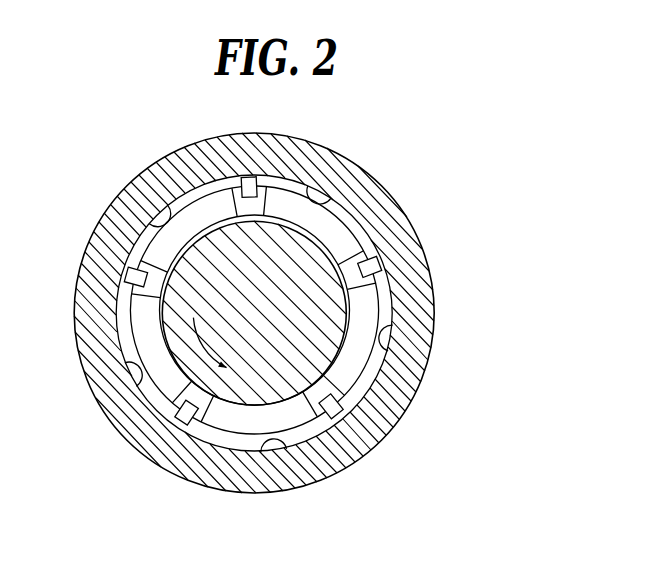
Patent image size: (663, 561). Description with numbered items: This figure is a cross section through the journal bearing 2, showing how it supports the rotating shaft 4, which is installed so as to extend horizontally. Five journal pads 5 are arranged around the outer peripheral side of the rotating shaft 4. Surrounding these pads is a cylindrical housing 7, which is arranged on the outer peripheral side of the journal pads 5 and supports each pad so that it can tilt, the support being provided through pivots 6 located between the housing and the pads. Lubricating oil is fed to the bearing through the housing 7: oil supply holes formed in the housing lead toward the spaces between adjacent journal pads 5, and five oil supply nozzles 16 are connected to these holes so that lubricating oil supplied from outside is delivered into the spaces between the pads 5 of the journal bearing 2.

The journal bearing 2 is at (429, 233).
The rotating shaft 4 is at (246, 322).
The journal pads 5 is at (398, 404).
The pivots 6 is at (422, 362).
The cylindrical housing 7 is at (423, 322).
The oil supply nozzles 16 is at (360, 440).